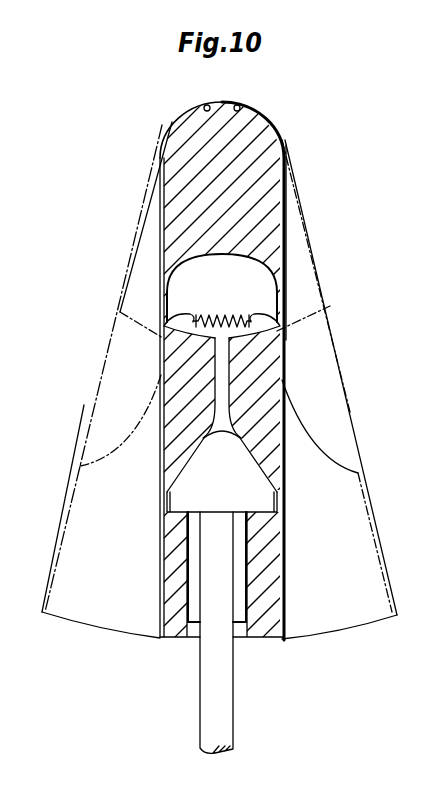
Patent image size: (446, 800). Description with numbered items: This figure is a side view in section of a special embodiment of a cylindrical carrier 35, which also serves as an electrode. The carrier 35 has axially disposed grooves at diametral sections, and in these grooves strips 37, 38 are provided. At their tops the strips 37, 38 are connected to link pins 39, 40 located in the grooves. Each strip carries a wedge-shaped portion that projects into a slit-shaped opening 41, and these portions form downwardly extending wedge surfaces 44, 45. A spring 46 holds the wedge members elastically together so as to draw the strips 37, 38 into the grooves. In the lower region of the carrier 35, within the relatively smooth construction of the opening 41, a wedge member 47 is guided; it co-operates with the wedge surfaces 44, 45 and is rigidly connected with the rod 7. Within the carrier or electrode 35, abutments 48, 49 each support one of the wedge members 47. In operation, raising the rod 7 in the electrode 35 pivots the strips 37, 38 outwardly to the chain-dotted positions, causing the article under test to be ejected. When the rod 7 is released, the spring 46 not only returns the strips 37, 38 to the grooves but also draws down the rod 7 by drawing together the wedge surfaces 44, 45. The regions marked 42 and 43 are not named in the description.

The rod 7 is at (208, 707).
The carrier 35 is at (177, 173).
The strip 37 is at (163, 233).
The strip 38 is at (287, 178).
The link pin 39 is at (203, 107).
The link pin 40 is at (241, 107).
The slit-shaped opening 41 is at (247, 265).
The insulating block 42 is at (165, 378).
The insulating block 43 is at (272, 380).
The wedge surface 44 is at (192, 445).
The wedge surface 45 is at (247, 452).
The spring 46 is at (257, 309).
The wedge member 47 is at (257, 503).
The abutment 48 is at (173, 566).
The abutment 49 is at (268, 581).